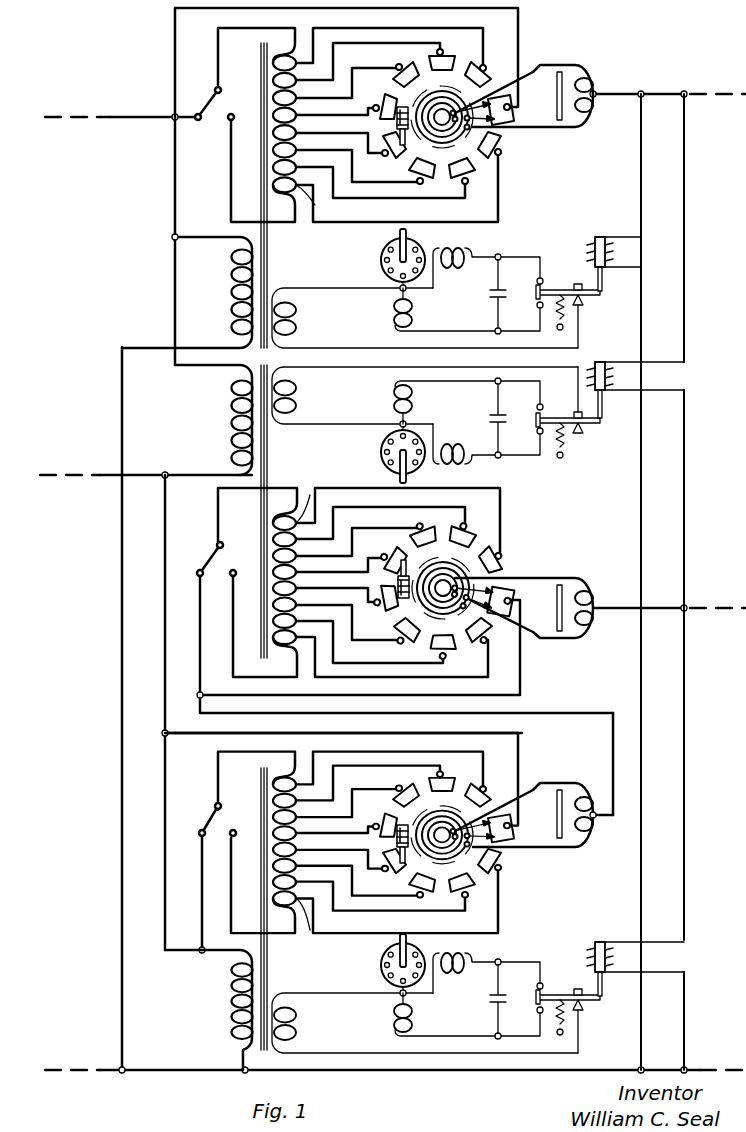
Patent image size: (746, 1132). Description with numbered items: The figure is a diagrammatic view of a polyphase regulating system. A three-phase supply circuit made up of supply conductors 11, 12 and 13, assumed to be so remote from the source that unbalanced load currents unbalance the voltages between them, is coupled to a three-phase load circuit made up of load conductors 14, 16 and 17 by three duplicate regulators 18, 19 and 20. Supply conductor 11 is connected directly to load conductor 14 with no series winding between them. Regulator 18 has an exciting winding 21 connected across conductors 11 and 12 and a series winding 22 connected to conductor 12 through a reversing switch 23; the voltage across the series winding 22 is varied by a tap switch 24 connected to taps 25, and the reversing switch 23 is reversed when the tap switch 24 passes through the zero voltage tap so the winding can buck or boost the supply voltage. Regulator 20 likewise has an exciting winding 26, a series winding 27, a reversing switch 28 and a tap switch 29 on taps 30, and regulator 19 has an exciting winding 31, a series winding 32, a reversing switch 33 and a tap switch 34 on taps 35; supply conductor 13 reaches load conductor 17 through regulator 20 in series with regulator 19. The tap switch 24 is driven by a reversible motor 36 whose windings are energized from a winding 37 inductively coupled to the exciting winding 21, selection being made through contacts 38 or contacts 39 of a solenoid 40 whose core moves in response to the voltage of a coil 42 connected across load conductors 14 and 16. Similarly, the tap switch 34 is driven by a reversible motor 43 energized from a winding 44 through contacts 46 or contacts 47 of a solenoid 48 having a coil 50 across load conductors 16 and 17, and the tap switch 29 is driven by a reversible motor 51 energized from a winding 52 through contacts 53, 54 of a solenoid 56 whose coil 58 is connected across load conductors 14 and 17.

The supply conductor 11 is at (115, 1068).
The supply conductor 12 is at (112, 119).
The supply conductor 13 is at (104, 477).
The load conductor 14 is at (700, 1068).
The load conductor 16 is at (688, 94).
The load conductor 17 is at (690, 608).
The regulator 18 is at (530, 161).
The regulator 19 is at (537, 571).
The regulator 20 is at (540, 876).
The exciting winding 21 is at (234, 281).
The series winding 22 is at (268, 89).
The reversing switch 23 is at (212, 124).
The tap switch 24 is at (460, 168).
The taps 25 is at (315, 205).
The exciting winding 26 is at (234, 1004).
The series winding 27 is at (270, 802).
The reversing switch 28 is at (214, 814).
The tap switch 29 is at (480, 880).
The taps 30 is at (310, 929).
The exciting winding 31 is at (234, 418).
The series winding 32 is at (270, 556).
The reversing switch 33 is at (207, 555).
The tap switch 34 is at (462, 638).
The taps 35 is at (311, 494).
The reversible motor 36 is at (375, 268).
The winding 37 is at (297, 313).
The contacts 38 is at (525, 316).
The contacts 39 is at (548, 279).
The solenoid 40 is at (604, 286).
The coil 42 is at (613, 257).
The reversible motor 43 is at (378, 450).
The winding 44 is at (297, 390).
The contacts 46 is at (523, 438).
The contacts 47 is at (546, 405).
The solenoid 48 is at (604, 418).
The coil 50 is at (613, 376).
The reversible motor 51 is at (356, 976).
The winding 52 is at (297, 1018).
The contacts 53 is at (526, 1021).
The contacts 54 is at (548, 984).
The solenoid 56 is at (613, 996).
The coil 58 is at (613, 958).